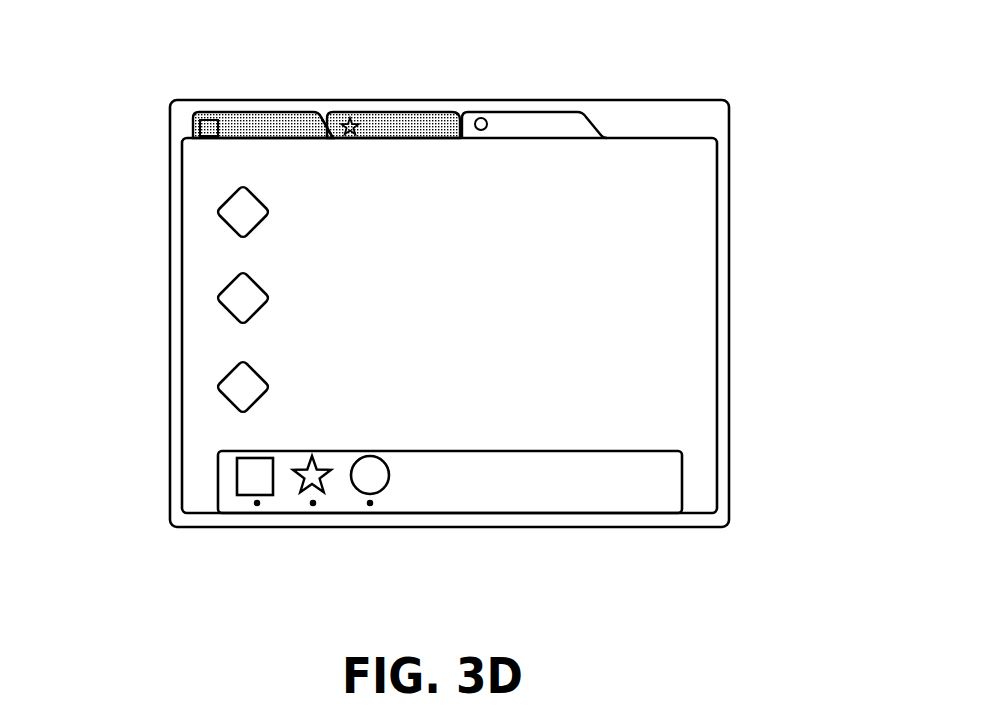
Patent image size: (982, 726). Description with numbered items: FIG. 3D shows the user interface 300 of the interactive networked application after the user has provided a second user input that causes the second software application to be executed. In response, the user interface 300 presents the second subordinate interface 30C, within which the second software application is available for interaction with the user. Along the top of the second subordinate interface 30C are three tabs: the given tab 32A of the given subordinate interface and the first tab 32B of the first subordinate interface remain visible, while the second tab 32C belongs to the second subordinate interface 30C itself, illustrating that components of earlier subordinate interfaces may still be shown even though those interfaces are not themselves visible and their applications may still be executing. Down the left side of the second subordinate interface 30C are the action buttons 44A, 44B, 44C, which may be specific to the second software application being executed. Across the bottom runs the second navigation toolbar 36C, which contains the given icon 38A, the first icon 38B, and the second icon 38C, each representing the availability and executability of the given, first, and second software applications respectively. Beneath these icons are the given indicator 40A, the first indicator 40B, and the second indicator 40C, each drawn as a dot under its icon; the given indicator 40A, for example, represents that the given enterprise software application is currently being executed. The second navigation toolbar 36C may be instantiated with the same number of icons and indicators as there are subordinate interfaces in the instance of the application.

The user interface 300 is at (772, 117).
The second subordinate interface 30C is at (198, 172).
The given tab 32A is at (263, 110).
The first tab 32B is at (383, 110).
The second tab 32C is at (520, 110).
The action button 44A is at (230, 226).
The action button 44B is at (230, 312).
The action button 44C is at (230, 401).
The second navigation toolbar 36C is at (685, 473).
The given icon 38A is at (236, 477).
The first icon 38B is at (293, 476).
The second icon 38C is at (353, 486).
The given indicator 40A is at (257, 506).
The first indicator 40B is at (313, 506).
The second indicator 40C is at (370, 506).